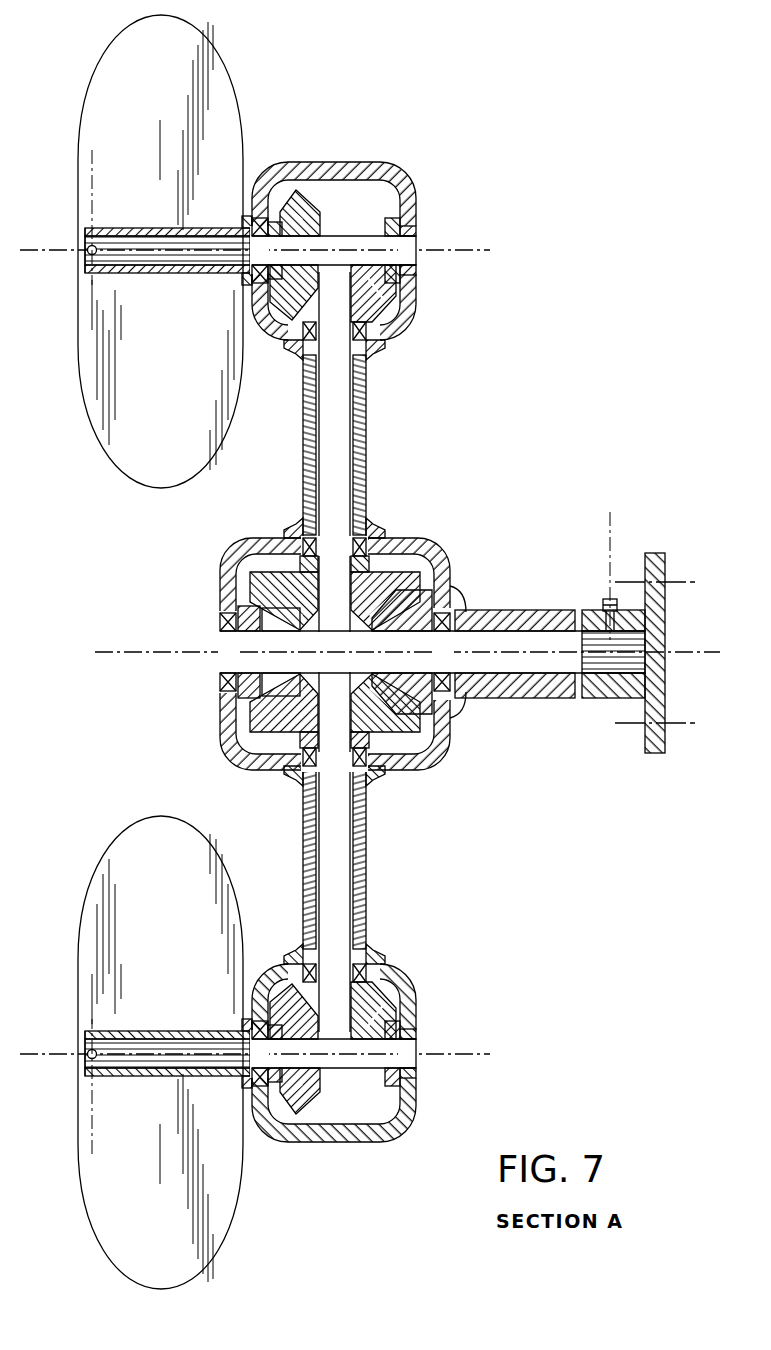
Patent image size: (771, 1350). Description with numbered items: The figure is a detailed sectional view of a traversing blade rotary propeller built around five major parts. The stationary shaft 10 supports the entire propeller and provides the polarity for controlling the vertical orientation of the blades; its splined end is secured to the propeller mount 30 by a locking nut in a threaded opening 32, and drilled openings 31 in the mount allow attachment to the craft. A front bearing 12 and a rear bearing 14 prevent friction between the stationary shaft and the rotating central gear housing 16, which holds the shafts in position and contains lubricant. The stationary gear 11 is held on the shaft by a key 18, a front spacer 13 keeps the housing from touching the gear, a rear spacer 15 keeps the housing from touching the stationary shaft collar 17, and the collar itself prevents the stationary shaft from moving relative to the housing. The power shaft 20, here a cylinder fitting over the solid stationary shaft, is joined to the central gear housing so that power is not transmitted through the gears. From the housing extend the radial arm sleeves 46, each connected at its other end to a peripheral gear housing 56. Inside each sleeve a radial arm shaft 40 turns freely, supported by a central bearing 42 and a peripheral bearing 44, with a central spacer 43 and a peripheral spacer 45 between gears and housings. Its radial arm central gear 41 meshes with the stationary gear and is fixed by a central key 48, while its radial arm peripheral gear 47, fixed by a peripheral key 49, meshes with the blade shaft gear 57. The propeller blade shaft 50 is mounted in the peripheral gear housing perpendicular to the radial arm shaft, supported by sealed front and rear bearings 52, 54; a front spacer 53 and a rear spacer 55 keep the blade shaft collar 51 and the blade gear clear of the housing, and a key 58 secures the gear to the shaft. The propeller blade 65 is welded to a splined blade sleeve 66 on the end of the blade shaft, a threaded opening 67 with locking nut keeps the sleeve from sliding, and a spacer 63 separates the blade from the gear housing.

The stationary shaft 10 is at (432, 649).
The stationary gear 11 is at (400, 627).
The stationary shaft front bearing 12 is at (453, 631).
The stationary shaft front spacer 13 is at (446, 672).
The stationary shaft rear bearing 14 is at (220, 626).
The stationary shaft rear spacer 15 is at (251, 609).
The central gear housing 16 is at (222, 578).
The stationary shaft collar 17 is at (241, 696).
The stationary gear key 18 is at (402, 678).
The power shaft 20 is at (542, 610).
The propeller mount 30 is at (665, 553).
The drilled opening 31 is at (667, 588).
The threaded opening 32 is at (606, 604).
The radial arm shaft 40 is at (341, 418).
The radial arm central gear 41 is at (298, 617).
The radial arm central bearing 42 is at (310, 540).
The radial arm central spacer 43 is at (334, 652).
The radial arm peripheral bearing 44 is at (334, 652).
The radial arm peripheral spacer 45 is at (334, 657).
The radial arm sleeve 46 is at (367, 441).
The radial arm peripheral gear 47 is at (334, 652).
The radial arm central keyway and key 48 is at (350, 580).
The radial arm peripheral keyway and key 49 is at (359, 652).
The propeller blade shaft 50 is at (417, 239).
The blade shaft collar 51 is at (384, 228).
The blade shaft front bearing 52 is at (417, 272).
The blade shaft front spacer 53 is at (404, 222).
The blade shaft rear bearing 54 is at (259, 652).
The blade shaft rear spacer 55 is at (276, 652).
The peripheral gear housing 56 is at (318, 165).
The blade shaft gear 57 is at (296, 200).
The blade shaft keyway and key 58 is at (282, 280).
The blade/gear housing spacer 63 is at (250, 226).
The propeller blade 65 is at (168, 67).
The propeller blade splined sleeve 66 is at (140, 230).
The threaded opening with locking nut 67 is at (88, 248).